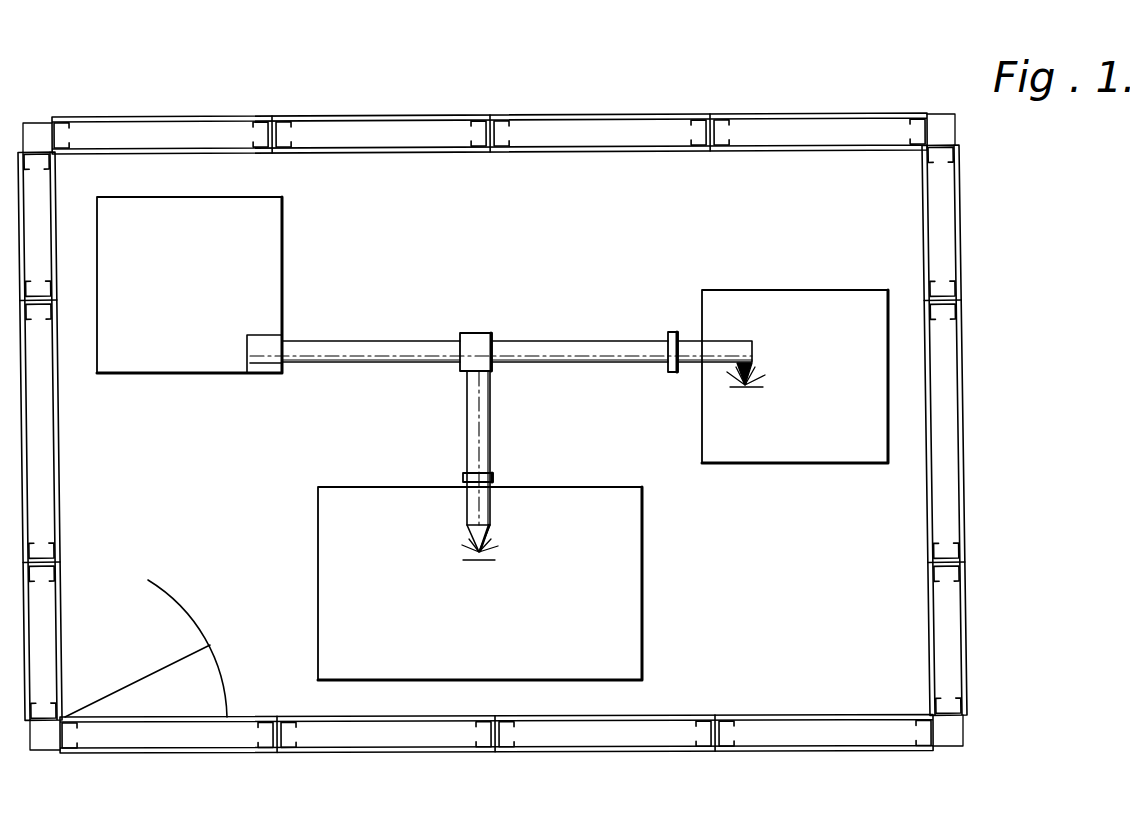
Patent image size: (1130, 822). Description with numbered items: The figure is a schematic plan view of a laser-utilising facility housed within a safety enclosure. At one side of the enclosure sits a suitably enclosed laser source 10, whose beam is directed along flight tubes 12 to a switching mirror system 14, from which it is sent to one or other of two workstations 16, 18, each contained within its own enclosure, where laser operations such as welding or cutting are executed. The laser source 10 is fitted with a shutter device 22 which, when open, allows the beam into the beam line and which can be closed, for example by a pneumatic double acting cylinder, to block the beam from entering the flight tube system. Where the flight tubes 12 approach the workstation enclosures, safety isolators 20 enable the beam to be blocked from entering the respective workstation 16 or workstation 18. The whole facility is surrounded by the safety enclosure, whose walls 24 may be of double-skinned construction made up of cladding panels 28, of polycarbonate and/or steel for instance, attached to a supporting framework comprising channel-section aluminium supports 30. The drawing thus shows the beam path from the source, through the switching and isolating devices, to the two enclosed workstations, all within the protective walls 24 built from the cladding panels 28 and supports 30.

The laser source 10 is at (283, 236).
The flight tubes 12 is at (385, 342).
The switching mirror system 14 is at (471, 343).
The workstation 16 is at (345, 538).
The workstation 18 is at (702, 413).
The safety isolators 20 is at (675, 331).
The shutter device 22 is at (268, 363).
The walls 24 is at (533, 460).
The cladding panels 28 is at (980, 429).
The channel-section aluminium supports 30 is at (950, 583).